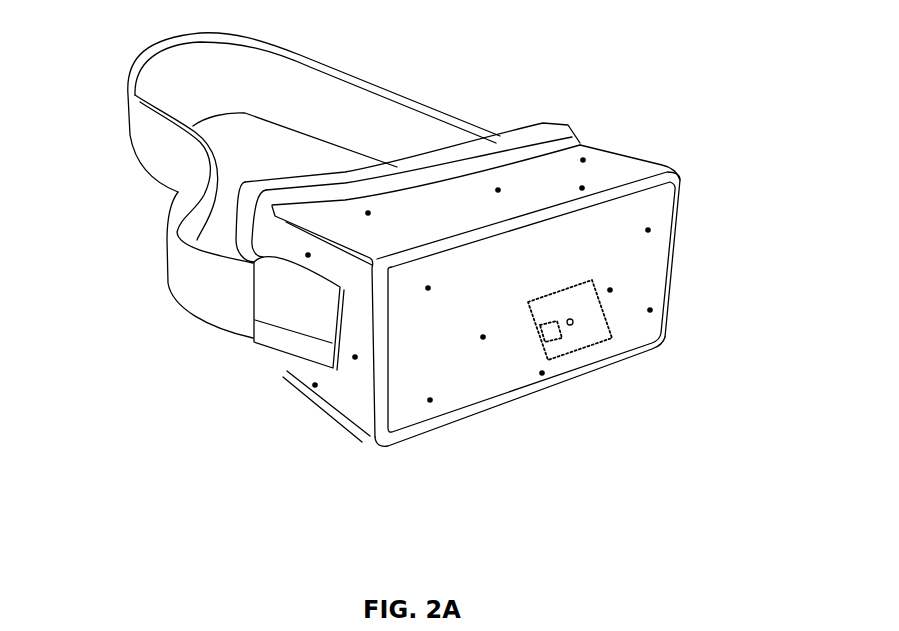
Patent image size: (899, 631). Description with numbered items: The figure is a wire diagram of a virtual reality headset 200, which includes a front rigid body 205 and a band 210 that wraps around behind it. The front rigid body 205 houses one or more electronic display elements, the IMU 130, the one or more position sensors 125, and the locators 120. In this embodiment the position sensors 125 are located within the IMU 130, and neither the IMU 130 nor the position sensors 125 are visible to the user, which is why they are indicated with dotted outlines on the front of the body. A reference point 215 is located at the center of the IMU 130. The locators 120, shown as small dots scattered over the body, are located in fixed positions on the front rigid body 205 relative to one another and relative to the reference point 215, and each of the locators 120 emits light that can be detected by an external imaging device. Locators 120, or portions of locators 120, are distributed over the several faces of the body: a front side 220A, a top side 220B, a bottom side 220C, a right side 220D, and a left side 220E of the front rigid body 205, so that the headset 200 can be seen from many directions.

The VR headset 200 is at (48, 33).
The band 210 is at (408, 95).
The front rigid body 205 is at (457, 304).
The front side 220A is at (418, 424).
The top side 220B is at (338, 212).
The bottom side 220C is at (310, 426).
The right side 220D is at (347, 390).
The left side 220E is at (651, 157).
The locators 120 is at (666, 300).
The position sensors 125 is at (537, 354).
The IMU 130 is at (622, 338).
The reference point 215 is at (575, 338).